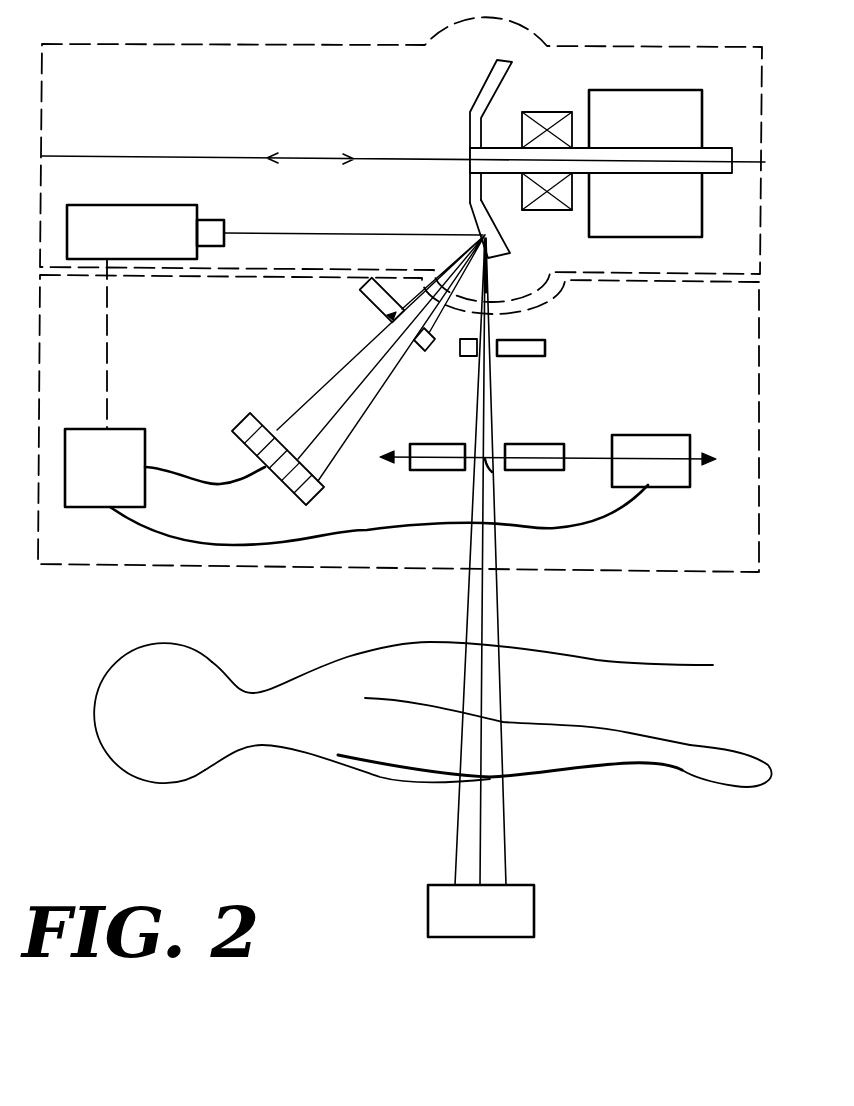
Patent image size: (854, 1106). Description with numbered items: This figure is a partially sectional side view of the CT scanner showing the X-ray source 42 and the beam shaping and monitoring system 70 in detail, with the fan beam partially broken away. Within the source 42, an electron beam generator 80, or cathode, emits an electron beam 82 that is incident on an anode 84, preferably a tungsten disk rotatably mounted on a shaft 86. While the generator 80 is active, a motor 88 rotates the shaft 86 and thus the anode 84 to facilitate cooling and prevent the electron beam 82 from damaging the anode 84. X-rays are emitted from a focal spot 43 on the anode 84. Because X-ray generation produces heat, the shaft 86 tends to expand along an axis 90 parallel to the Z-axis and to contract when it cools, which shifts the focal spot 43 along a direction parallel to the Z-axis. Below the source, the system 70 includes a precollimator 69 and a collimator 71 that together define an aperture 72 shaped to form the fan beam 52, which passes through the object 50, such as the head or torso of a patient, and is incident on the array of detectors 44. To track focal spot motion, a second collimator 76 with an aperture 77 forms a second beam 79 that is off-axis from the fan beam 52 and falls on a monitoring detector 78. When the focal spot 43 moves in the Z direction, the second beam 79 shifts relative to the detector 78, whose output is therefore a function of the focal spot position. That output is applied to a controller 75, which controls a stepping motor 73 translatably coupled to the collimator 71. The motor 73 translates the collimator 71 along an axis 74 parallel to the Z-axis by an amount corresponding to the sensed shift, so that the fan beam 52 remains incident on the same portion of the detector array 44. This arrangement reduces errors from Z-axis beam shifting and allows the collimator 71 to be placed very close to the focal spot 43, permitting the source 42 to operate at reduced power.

The X-ray source 42 is at (397, 43).
The focal spot 43 is at (490, 228).
The array of detectors 44 is at (492, 919).
The object 50 is at (393, 781).
The fan-shaped beam 52 is at (452, 845).
The precollimator 69 is at (540, 353).
The beam shaping and monitoring system 70 is at (368, 563).
The collimator 71 is at (451, 442).
The aperture 72 is at (492, 471).
The stepping motor 73 is at (648, 433).
The axis 74 is at (401, 452).
The controller 75 is at (118, 474).
The second collimator 76 is at (367, 304).
The aperture 77 is at (400, 329).
The monitoring detector 78 is at (236, 428).
The second beam 79 is at (335, 375).
The electron beam generator 80 is at (150, 203).
The electron beam 82 is at (306, 231).
The anode 84 is at (468, 114).
The shaft 86 is at (498, 146).
The motor 88 is at (656, 122).
The axis 90 is at (305, 155).